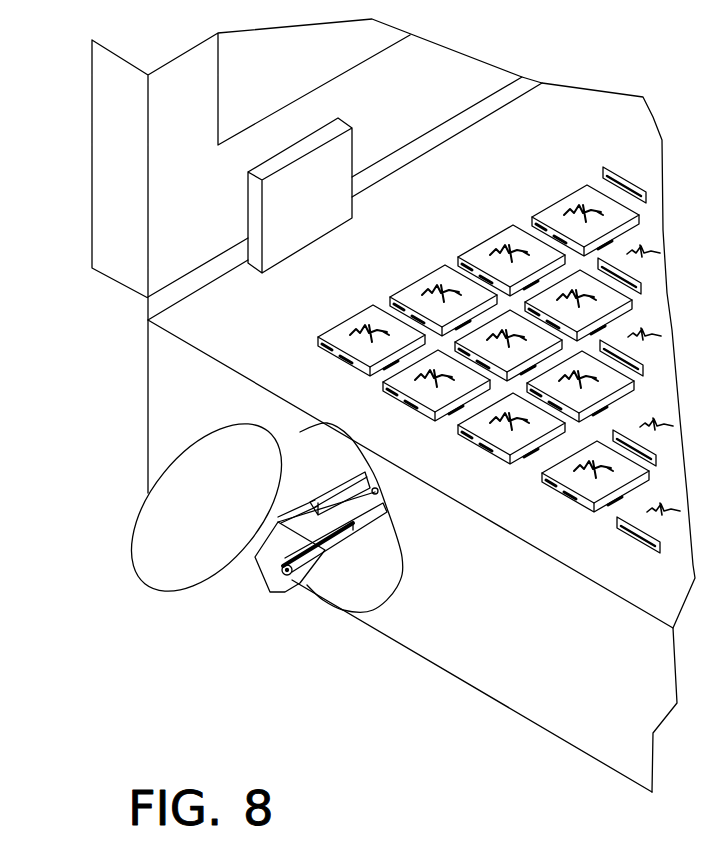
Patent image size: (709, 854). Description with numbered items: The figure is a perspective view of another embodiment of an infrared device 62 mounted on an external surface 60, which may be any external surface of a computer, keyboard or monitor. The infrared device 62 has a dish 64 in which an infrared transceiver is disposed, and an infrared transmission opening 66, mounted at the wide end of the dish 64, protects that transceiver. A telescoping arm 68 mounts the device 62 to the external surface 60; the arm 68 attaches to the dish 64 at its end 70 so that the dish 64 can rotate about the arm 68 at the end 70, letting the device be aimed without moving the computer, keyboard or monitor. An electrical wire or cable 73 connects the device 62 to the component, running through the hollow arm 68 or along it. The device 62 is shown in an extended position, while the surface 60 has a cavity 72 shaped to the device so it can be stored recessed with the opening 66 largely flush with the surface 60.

The external surface 60 is at (188, 399).
The infrared device 62 is at (190, 609).
The dish 64 is at (257, 547).
The infrared transmission opening 66 is at (192, 493).
The telescoping arm 68 is at (363, 535).
The end 70 is at (292, 578).
The cavity 72 is at (357, 578).
The electrical wire or cable 73 is at (350, 557).